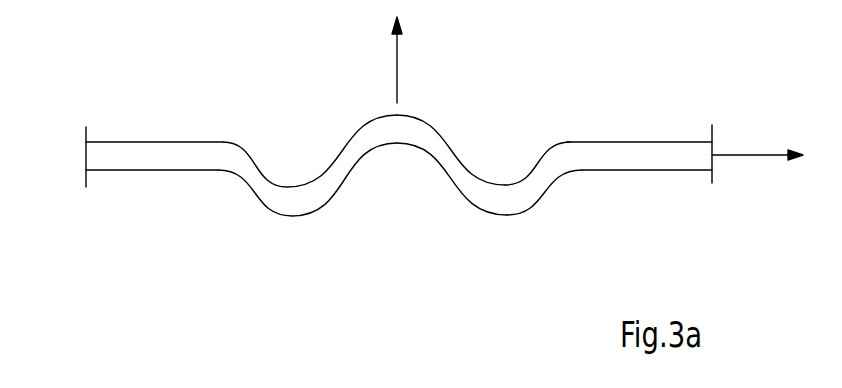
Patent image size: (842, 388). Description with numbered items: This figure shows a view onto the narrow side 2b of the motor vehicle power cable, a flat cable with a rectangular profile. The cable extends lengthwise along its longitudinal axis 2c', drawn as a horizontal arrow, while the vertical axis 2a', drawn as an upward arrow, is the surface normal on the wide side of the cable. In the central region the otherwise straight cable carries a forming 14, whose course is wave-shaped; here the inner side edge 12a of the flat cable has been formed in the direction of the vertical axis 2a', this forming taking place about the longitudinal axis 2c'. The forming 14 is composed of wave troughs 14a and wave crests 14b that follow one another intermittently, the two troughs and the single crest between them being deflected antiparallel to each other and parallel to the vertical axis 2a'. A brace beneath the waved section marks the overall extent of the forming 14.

The inner side edge 12a is at (163, 140).
The narrow side 2b is at (132, 163).
The forming 14 is at (400, 184).
The wave trough 14a is at (293, 200).
The wave crest 14b is at (388, 127).
The vertical axis 2a' is at (425, 60).
The longitudinal axis 2c' is at (757, 179).